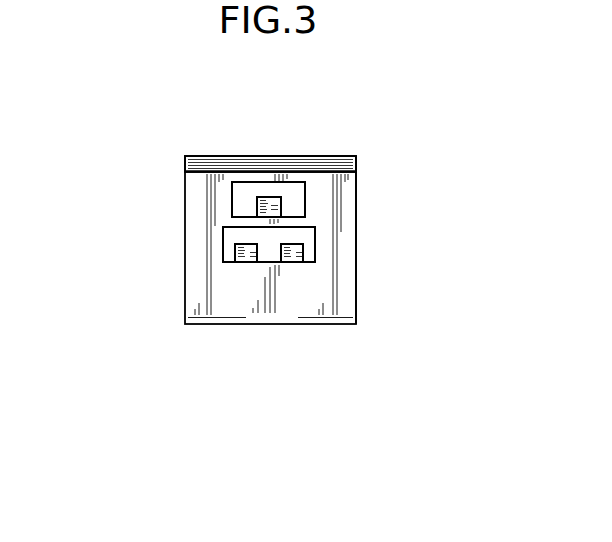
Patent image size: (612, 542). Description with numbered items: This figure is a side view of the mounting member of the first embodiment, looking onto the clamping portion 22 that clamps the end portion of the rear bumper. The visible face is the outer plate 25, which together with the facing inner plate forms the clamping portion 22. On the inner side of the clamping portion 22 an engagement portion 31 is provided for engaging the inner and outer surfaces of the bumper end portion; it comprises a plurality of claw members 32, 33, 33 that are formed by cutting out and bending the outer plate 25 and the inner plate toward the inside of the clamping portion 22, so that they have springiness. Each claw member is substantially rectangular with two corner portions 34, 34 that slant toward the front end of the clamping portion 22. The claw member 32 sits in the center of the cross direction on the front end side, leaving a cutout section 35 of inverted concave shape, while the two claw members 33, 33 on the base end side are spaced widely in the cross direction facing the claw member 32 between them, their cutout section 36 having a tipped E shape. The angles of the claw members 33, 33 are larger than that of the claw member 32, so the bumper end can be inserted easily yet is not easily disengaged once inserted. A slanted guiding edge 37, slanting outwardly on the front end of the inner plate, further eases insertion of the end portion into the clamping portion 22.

The clamping portion 22 is at (362, 240).
The outer plate 25 is at (342, 287).
The engagement portion 31 is at (199, 279).
The claw member 32 is at (266, 196).
The claw members 33 is at (292, 251).
The corner portions 34 is at (256, 196).
The cutout section 35 is at (240, 190).
The cutout section 36 is at (234, 240).
The slanted guiding edge 37 is at (238, 158).